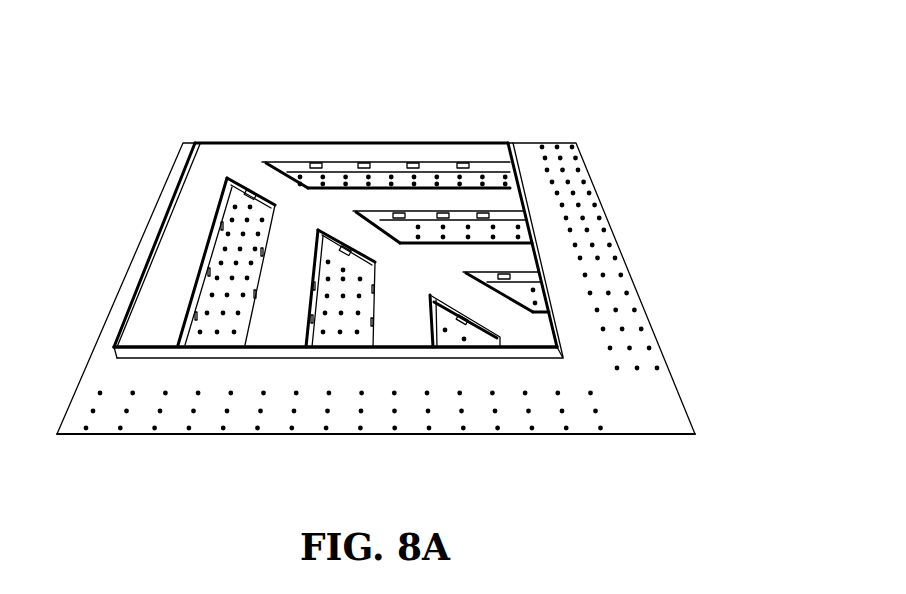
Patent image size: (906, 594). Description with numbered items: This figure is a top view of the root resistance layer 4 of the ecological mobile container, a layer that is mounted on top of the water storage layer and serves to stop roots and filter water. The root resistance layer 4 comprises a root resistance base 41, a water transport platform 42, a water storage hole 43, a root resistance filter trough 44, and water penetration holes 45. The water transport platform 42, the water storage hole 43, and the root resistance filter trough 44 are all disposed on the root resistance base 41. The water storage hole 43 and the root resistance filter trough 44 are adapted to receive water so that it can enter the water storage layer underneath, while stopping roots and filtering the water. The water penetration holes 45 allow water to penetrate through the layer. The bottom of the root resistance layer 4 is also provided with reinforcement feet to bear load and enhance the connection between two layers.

The root resistance layer 4 is at (114, 155).
The root resistance base 41 is at (650, 409).
The water transport platform 42 is at (379, 153).
The water storage hole 43 is at (468, 226).
The root resistance filter trough 44 is at (521, 289).
The water penetration holes 45 is at (618, 310).